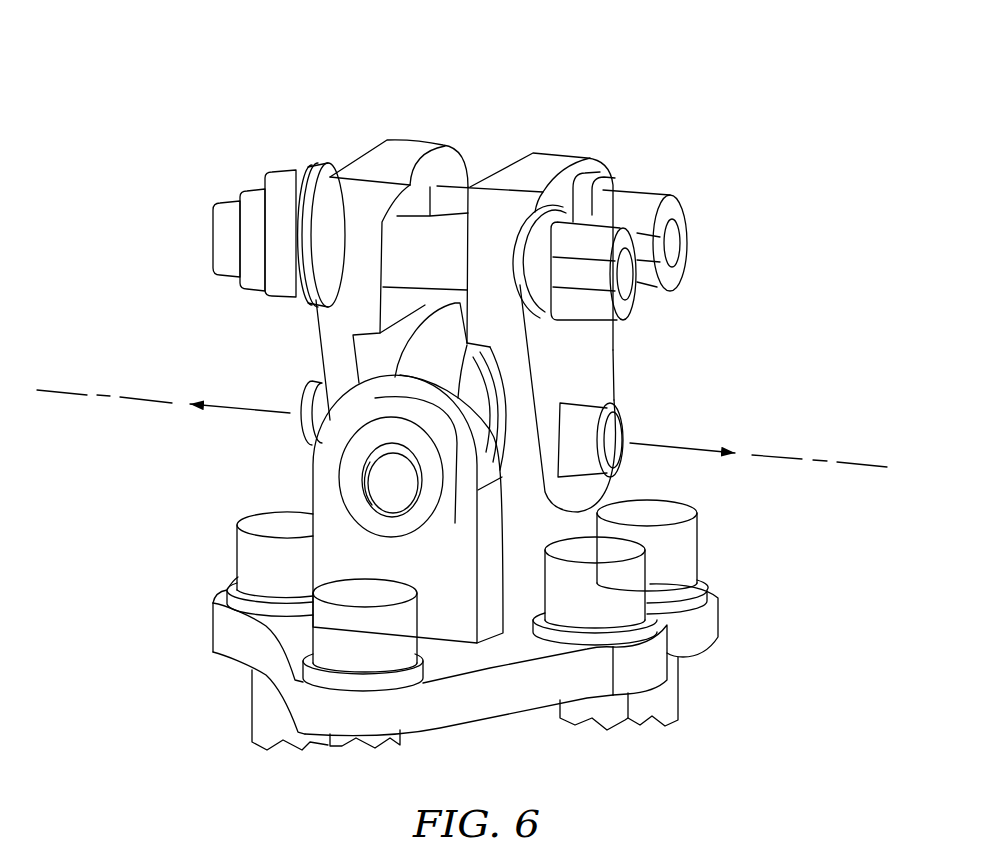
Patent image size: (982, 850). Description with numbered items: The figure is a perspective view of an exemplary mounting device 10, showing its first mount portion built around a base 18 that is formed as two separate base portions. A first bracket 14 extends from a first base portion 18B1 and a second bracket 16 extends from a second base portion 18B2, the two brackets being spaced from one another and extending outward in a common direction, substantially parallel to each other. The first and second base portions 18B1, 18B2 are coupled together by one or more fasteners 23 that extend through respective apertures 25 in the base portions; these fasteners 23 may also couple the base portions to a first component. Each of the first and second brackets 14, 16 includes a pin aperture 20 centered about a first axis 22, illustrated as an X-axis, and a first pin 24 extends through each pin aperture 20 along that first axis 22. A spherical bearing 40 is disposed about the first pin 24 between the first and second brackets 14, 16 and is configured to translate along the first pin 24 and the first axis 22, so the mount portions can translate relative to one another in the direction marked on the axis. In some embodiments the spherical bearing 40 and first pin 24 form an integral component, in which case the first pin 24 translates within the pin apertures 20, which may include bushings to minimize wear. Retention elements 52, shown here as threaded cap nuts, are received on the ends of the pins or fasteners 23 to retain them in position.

The mounting device 10 is at (674, 147).
The first bracket 14 is at (330, 327).
The second bracket 16 is at (577, 350).
The base 18 is at (442, 127).
The first base portion 18B1 is at (387, 148).
The second base portion 18B2 is at (577, 160).
The pin aperture 20 is at (578, 397).
The first axis 22 is at (853, 463).
The fastener 23 is at (687, 218).
The first pin 24 is at (613, 453).
The aperture 25 is at (447, 183).
The spherical bearing 40 is at (455, 523).
The retention element 52 is at (307, 172).